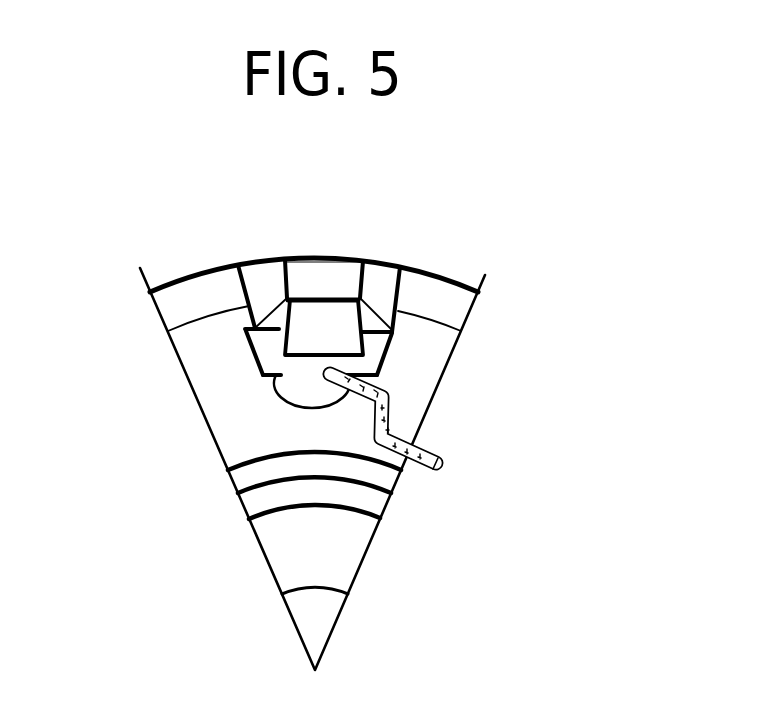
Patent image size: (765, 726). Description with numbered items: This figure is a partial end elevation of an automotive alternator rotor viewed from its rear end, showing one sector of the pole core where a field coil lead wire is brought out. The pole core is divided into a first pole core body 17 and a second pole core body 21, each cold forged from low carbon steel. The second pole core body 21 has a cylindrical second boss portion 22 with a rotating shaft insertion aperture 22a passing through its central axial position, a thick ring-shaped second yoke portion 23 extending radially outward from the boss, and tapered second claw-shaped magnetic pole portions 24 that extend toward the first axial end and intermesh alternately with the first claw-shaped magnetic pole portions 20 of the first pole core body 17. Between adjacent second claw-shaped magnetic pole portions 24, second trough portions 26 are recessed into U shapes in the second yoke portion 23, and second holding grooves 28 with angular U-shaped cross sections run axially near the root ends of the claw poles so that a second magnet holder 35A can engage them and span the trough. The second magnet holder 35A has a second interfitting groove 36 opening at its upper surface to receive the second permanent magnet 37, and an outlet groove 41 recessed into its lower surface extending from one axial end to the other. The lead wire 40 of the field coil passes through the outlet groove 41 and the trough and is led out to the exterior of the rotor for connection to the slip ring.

The first pole core body 17 is at (262, 258).
The first claw-shaped magnetic pole portions 20 is at (341, 268).
The second pole core body 21 is at (176, 280).
The second boss portion 22 is at (350, 523).
The rotating shaft insertion aperture 22a is at (333, 623).
The second yoke portion 23 is at (400, 383).
The second claw-shaped magnetic pole portions 24 is at (443, 295).
The second trough portions 26 is at (300, 402).
The second holding grooves 28 is at (378, 338).
The second magnet holder 35A is at (262, 345).
The second interfitting groove 36 is at (272, 375).
The second permanent magnet 37 is at (315, 317).
The lead wire 40 is at (395, 428).
The outlet groove 41 is at (285, 388).